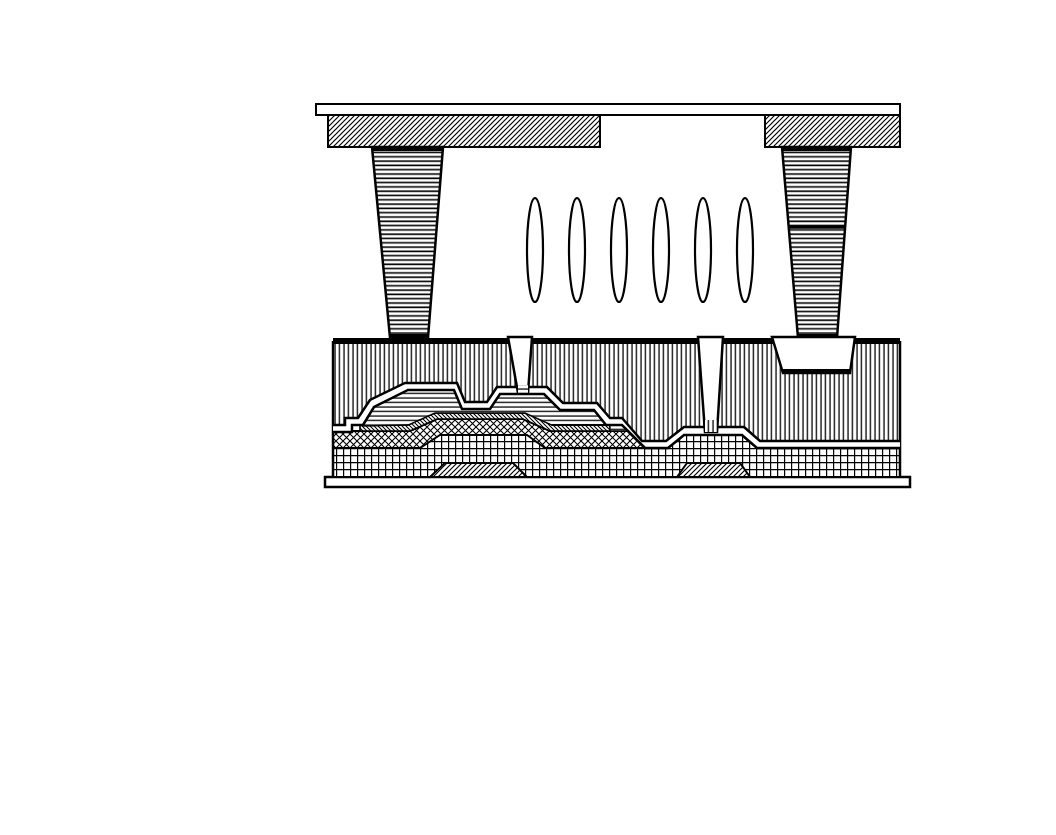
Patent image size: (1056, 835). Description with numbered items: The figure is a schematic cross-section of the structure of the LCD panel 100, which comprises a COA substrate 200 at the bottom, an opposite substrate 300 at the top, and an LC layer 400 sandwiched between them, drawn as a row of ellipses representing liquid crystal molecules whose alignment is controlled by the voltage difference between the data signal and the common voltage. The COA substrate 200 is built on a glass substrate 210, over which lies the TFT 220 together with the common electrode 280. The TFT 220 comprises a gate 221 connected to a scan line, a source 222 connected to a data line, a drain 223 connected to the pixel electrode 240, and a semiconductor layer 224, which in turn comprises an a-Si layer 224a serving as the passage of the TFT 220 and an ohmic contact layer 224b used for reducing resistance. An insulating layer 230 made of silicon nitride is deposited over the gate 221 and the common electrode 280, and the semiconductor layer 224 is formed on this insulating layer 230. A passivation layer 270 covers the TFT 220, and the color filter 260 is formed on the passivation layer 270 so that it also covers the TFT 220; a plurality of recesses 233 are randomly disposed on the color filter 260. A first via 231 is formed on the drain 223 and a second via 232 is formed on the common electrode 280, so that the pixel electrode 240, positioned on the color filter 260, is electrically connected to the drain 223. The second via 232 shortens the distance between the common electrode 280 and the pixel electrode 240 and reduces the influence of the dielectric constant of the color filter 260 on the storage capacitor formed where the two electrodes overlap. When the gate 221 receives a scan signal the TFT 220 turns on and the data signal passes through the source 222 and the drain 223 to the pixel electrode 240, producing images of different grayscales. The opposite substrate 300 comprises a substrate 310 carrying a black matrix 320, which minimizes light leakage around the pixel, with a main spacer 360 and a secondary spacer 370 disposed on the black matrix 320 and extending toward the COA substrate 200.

The LCD panel 100 is at (593, 37).
The COA substrate 200 is at (273, 335).
The glass substrate 210 is at (834, 487).
The TFT 220 is at (517, 506).
The gate 221 is at (484, 470).
The source 222 is at (410, 413).
The drain 223 is at (553, 413).
The semiconductor layer 224 is at (528, 497).
The a-Si layer 224a is at (613, 437).
The ohmic contact layer 224b is at (562, 428).
The insulating layer 230 is at (802, 465).
The first via 231 is at (514, 337).
The second via 232 is at (709, 348).
The recesses 233 is at (822, 352).
The pixel electrode 240 is at (903, 343).
The color filter 260 is at (338, 396).
The passivation layer 270 is at (893, 444).
The common electrode 280 is at (722, 468).
The opposite substrate 300 is at (262, 103).
The substrate 310 is at (452, 106).
The black matrix 320 is at (886, 130).
The main spacers 360 is at (395, 215).
The secondary spacers 370 is at (837, 176).
The LC layer 400 is at (754, 237).